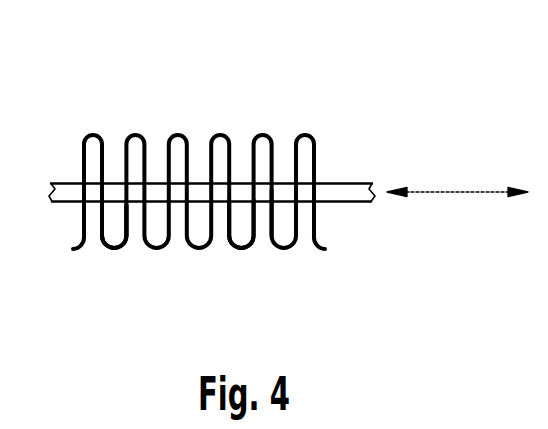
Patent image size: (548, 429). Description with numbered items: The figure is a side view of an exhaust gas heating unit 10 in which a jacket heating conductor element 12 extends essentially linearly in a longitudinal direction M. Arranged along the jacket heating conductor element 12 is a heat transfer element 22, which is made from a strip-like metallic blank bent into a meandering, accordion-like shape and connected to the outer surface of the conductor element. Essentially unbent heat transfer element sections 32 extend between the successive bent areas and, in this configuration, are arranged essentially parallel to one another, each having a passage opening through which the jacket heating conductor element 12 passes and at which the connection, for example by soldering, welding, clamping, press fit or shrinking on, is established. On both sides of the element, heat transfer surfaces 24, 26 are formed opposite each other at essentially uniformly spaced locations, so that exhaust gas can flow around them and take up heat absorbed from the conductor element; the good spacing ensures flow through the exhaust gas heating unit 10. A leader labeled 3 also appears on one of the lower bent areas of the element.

The exhaust gas heating unit 10 is at (227, 167).
The jacket heating conductor element 12 is at (62, 204).
The heat transfer element 22 is at (227, 125).
The heat transfer surface 24 is at (120, 218).
The heat transfer surface 26 is at (123, 226).
The loop 3 is at (242, 250).
The heat transfer element section 32 is at (275, 226).
The longitudinal direction M is at (458, 190).